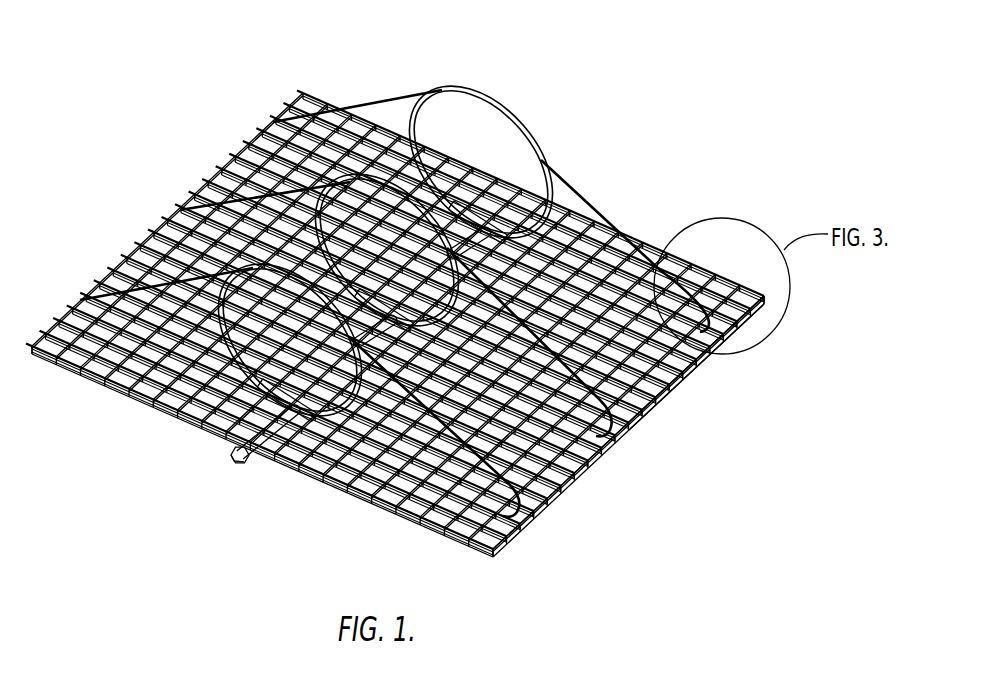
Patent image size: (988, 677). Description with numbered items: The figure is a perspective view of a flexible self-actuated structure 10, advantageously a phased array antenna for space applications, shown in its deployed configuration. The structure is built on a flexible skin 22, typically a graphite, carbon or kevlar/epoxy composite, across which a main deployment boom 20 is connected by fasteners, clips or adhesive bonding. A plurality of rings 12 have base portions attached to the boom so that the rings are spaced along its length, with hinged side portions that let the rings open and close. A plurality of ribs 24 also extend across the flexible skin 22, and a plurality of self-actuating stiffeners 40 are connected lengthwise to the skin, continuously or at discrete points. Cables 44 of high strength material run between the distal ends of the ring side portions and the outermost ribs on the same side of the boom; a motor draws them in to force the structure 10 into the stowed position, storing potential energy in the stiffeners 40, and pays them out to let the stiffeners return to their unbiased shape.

The self-actuated structure 10 is at (420, 319).
The rings 12 is at (449, 86).
The main deployment boom 20 is at (232, 462).
The flexible skin 22 is at (622, 442).
The ribs 24 is at (105, 398).
The self-actuating stiffeners 40 is at (690, 367).
The cables 44 is at (597, 193).